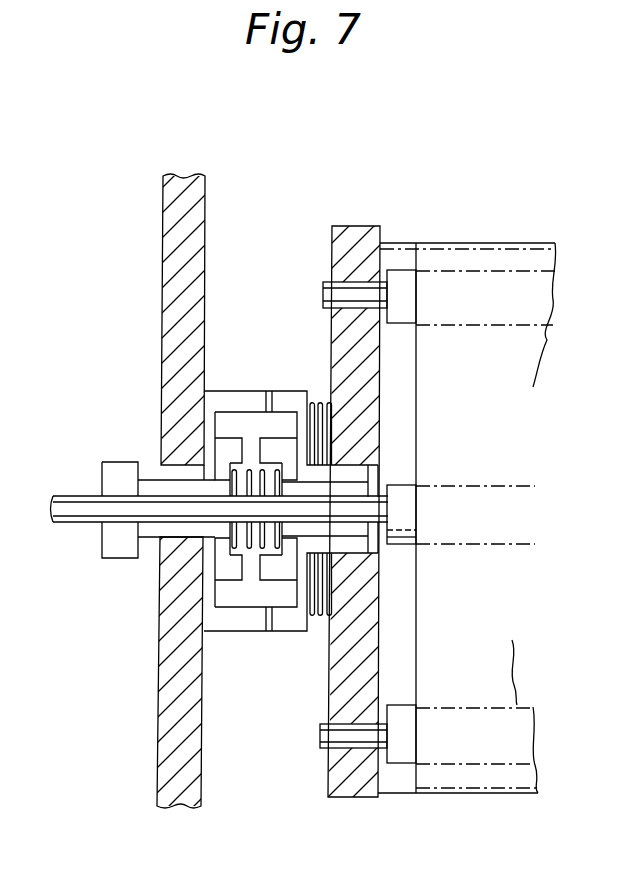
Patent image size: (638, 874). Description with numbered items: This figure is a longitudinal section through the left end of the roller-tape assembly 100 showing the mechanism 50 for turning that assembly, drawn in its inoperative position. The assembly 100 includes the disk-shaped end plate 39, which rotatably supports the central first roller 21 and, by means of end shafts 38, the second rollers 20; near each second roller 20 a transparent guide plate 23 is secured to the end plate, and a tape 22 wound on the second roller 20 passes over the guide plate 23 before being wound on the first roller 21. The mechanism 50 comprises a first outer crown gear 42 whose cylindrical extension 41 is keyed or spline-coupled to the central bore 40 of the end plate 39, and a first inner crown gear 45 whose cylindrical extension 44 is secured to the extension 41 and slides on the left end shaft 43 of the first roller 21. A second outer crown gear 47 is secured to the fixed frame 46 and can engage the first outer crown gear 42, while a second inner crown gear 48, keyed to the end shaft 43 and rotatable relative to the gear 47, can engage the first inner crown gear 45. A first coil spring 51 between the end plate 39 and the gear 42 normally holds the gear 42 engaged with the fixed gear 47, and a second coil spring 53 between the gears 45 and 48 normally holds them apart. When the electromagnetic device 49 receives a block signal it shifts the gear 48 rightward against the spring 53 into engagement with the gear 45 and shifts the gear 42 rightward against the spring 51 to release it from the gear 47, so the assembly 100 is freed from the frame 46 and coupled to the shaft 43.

The fixed frame 46 is at (204, 188).
The second outer crown gear 47 is at (244, 392).
The first outer crown gear 42 is at (292, 392).
The second inner crown gear 48 is at (233, 578).
The first inner crown gear 45 is at (283, 578).
The second coil spring 53 is at (233, 540).
The first coil spring 51 is at (330, 405).
The electromagnetic device 49 is at (118, 464).
The left end shaft 43 is at (76, 518).
The cylindrical extension 44 is at (362, 528).
The end plate 39 is at (360, 226).
The cylindrical extension 41 is at (346, 547).
The end shaft 38 is at (324, 290).
The central bore 40 is at (378, 476).
The roller-tape assembly 100 is at (462, 183).
The guide plate 23 is at (494, 243).
The second roller 20 is at (494, 318).
The tape 22 is at (537, 365).
The first roller 21 is at (495, 492).
The mechanism for turning the roller-tape assembly 50 is at (257, 316).